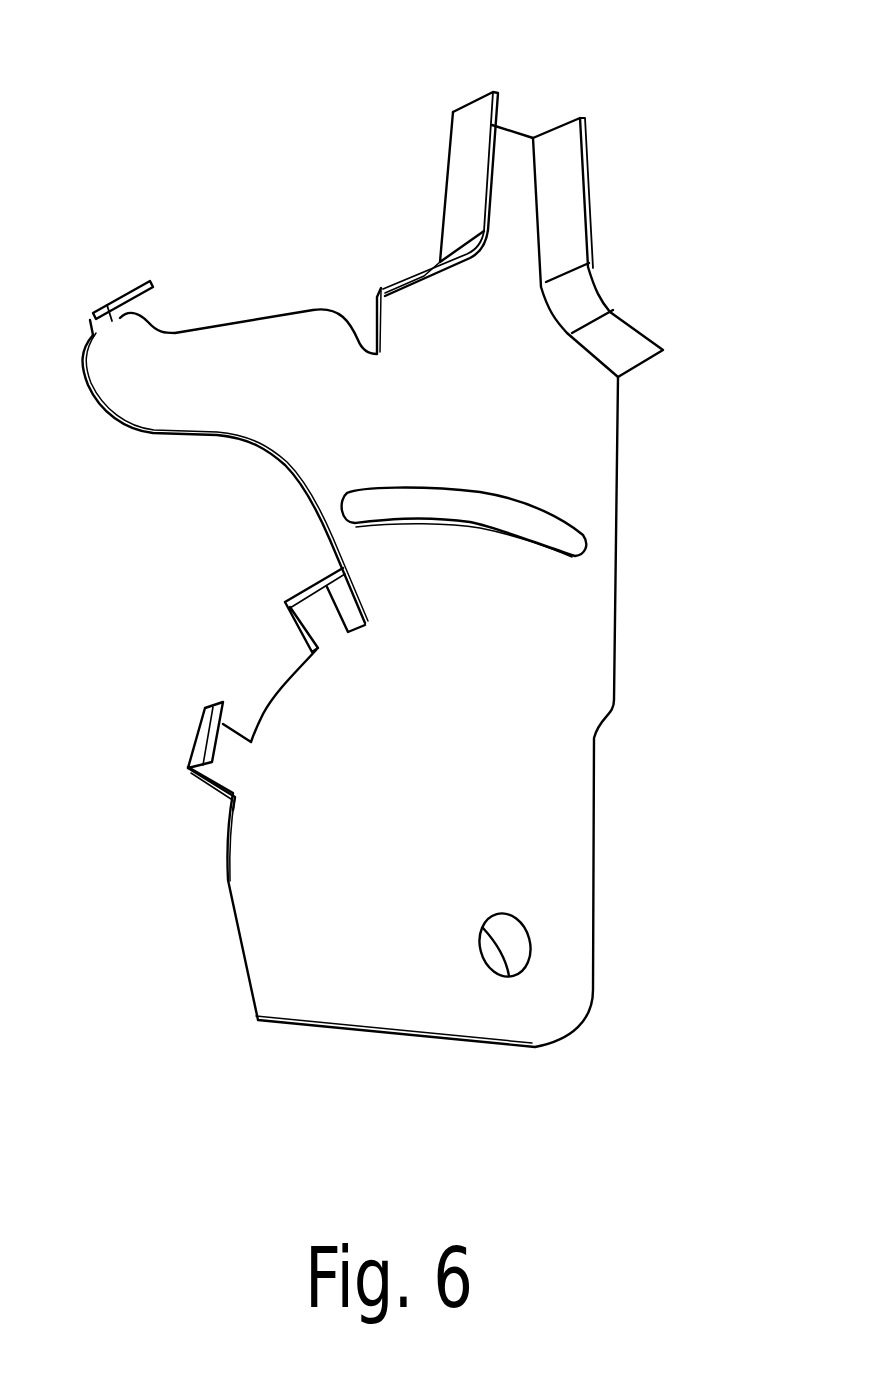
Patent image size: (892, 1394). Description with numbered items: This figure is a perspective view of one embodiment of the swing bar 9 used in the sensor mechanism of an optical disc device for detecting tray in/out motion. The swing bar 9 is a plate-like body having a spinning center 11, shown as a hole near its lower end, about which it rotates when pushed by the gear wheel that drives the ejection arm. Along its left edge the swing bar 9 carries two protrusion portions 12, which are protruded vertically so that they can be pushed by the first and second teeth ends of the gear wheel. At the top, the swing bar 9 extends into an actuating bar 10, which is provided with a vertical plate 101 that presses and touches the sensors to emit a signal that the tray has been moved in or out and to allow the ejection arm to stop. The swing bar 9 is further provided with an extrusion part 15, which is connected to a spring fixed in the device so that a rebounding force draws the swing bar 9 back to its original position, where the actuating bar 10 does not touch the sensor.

The swing bar 9 is at (540, 713).
The actuating bar 10 is at (507, 188).
The vertical plate 101 is at (472, 150).
The spinning center 11 is at (517, 953).
The protrusion portion 12 is at (317, 587).
The extrusion part 15 is at (118, 342).